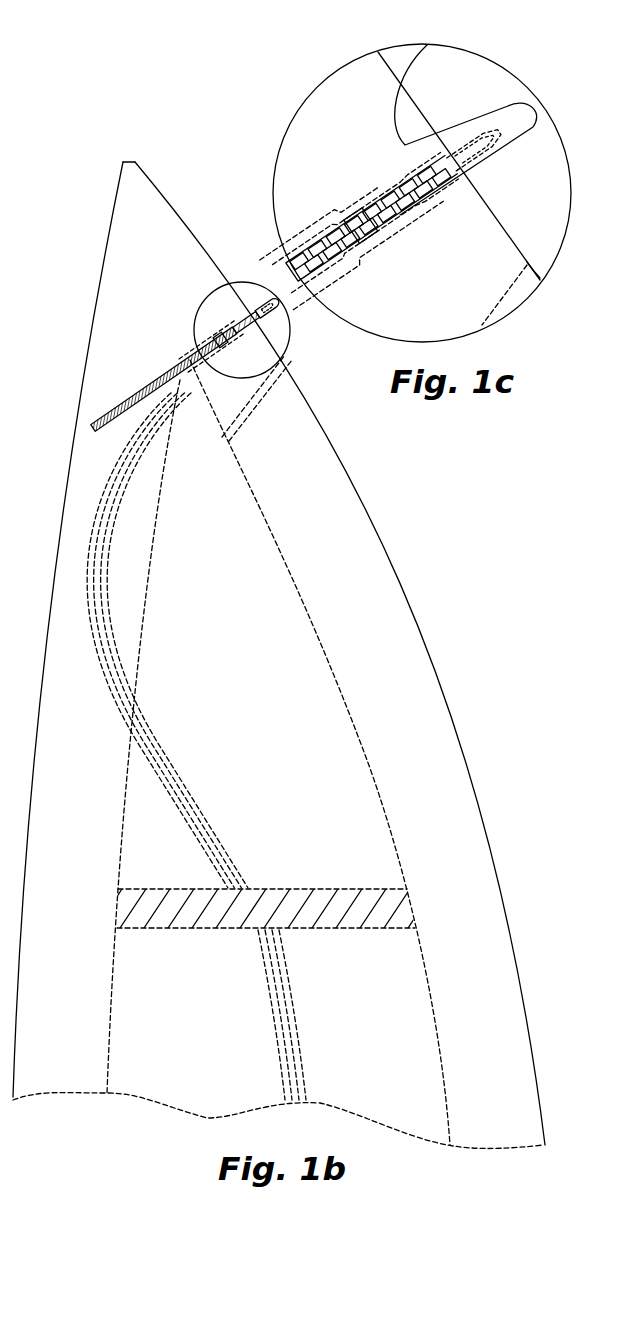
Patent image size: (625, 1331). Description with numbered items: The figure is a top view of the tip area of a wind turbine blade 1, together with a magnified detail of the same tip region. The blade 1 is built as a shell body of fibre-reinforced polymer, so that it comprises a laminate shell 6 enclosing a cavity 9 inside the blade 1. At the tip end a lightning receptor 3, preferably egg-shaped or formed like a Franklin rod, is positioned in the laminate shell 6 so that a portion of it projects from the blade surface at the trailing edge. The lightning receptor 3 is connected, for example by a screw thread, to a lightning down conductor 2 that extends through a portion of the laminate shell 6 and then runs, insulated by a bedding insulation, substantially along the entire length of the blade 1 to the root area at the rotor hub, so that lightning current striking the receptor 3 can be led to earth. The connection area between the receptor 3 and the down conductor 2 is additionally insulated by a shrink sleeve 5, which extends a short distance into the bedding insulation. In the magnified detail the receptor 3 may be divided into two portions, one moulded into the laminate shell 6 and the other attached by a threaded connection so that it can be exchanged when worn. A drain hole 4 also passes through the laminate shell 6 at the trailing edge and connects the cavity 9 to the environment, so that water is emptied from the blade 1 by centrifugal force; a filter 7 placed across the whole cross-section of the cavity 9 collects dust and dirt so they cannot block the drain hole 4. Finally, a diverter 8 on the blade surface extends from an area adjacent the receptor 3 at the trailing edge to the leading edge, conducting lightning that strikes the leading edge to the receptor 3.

In FIG. 1B, the blade 1 is at (176, 160).
In FIG. 1B, the lightning down conductor 2 is at (100, 565).
In FIG. 1B, the lightning receptor 3 is at (280, 300).
In FIG. 1C, the lightning receptor 3 is at (521, 104).
In FIG. 1B, the drain hole 4 is at (262, 393).
In FIG. 1C, the drain hole 4 is at (510, 305).
In FIG. 1C, the insulation 5 is at (420, 46).
In FIG. 1B, the laminate shell 6 is at (435, 686).
In FIG. 1B, the filter 7 is at (393, 902).
In FIG. 1B, the diverter 8 is at (130, 397).
In FIG. 1C, the diverter 8 is at (302, 266).
In FIG. 1B, the cavity 9 is at (263, 583).